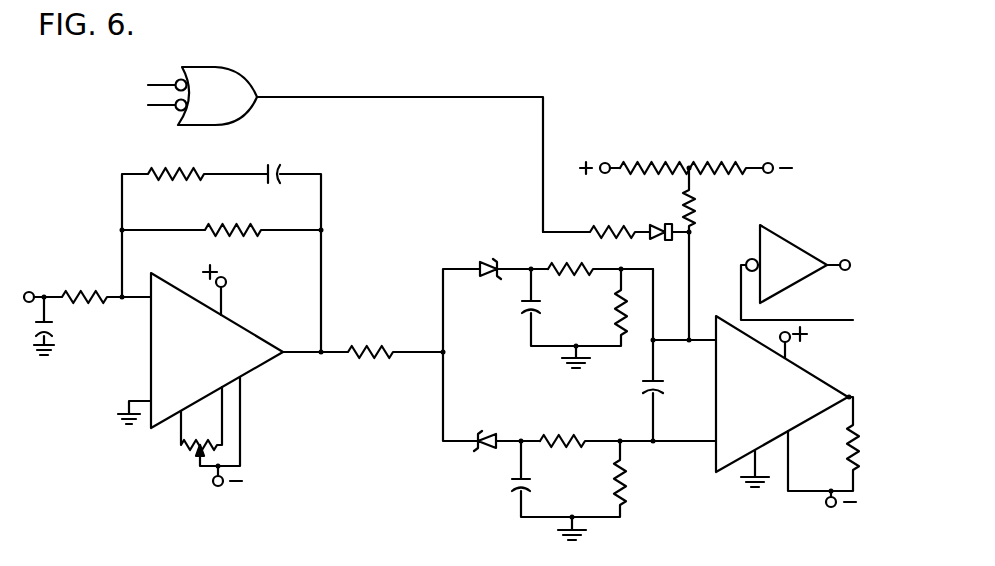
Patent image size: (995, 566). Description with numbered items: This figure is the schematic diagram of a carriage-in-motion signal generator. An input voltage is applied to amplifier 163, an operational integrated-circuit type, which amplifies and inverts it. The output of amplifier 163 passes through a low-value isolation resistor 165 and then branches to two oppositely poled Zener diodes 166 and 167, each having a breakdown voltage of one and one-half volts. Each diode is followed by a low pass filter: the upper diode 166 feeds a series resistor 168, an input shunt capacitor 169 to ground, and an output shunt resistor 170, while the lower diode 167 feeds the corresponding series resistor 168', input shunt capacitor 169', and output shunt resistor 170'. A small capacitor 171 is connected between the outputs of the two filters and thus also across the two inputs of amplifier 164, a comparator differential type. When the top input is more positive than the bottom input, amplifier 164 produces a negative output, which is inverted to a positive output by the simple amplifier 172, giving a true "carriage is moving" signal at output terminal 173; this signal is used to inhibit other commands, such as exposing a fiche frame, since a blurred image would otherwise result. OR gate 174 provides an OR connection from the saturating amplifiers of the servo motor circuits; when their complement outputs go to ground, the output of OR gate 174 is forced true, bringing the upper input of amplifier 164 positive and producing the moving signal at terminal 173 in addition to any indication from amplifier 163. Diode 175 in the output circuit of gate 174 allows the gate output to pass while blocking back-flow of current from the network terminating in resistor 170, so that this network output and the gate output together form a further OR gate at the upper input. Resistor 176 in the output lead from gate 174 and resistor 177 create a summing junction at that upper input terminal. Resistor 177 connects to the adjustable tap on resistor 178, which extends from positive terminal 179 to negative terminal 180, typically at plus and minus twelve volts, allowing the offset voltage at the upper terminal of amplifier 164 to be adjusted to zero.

The amplifier 163 is at (238, 322).
The amplifier 164 is at (812, 366).
The isolation resistor 165 is at (392, 341).
The Zener diode 166 is at (508, 250).
The Zener diode 167 is at (474, 428).
The series resistor 168 is at (591, 255).
The series resistor 168' is at (586, 427).
The input shunt capacitor 169 is at (529, 307).
The input shunt capacitor 169' is at (519, 479).
The output shunt resistor 170 is at (601, 307).
The output shunt resistor 170' is at (600, 479).
The capacitor 171 is at (654, 380).
The amplifier 172 is at (794, 249).
The output terminal 173 is at (845, 280).
The OR gate 174 is at (254, 77).
The diode 175 is at (666, 220).
The resistor 176 is at (596, 219).
The resistor 177 is at (699, 200).
The resistor 178 is at (705, 166).
The positive terminal 179 is at (607, 155).
The negative terminal 180 is at (771, 154).